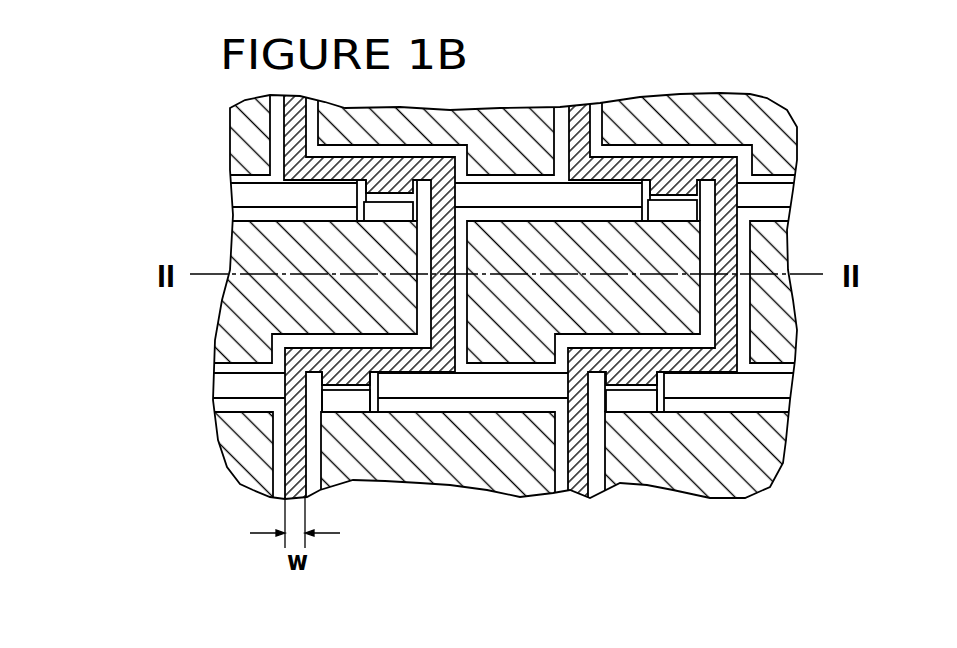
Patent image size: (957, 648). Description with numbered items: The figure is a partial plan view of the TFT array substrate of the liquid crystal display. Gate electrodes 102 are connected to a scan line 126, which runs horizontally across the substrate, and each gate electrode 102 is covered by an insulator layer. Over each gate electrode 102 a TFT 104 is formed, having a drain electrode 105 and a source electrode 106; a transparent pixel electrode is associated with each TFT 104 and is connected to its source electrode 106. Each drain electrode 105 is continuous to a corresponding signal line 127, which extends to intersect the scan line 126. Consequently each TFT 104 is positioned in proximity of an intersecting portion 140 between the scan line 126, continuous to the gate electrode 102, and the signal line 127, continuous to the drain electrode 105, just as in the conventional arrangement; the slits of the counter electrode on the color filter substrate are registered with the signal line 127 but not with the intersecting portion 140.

The TFT 104 is at (672, 194).
The intersecting portion 140 is at (751, 150).
The scan line 126 is at (820, 405).
The signal line 127 is at (293, 467).
The drain electrode 105 is at (334, 380).
The source electrode 106 is at (352, 405).
The gate electrode 102 is at (377, 390).